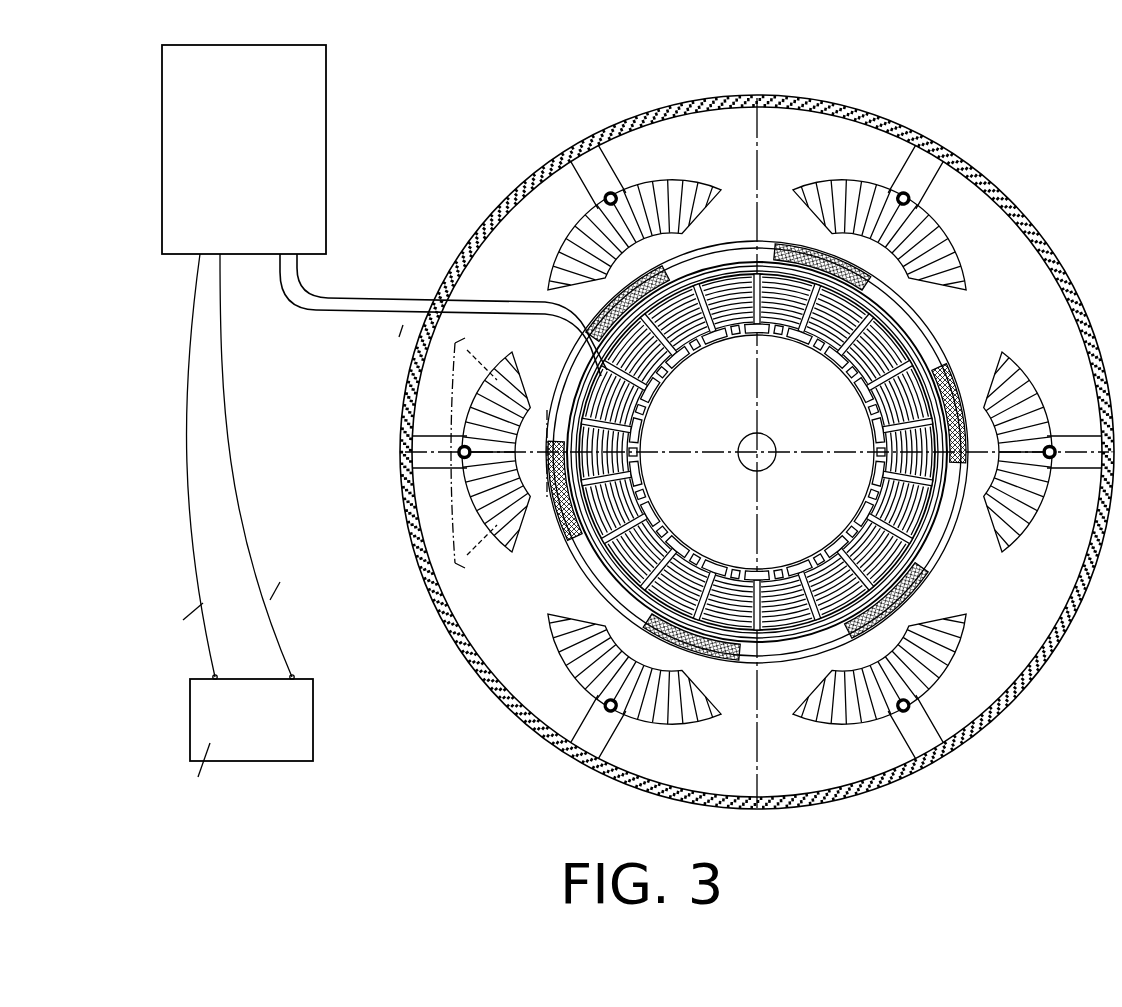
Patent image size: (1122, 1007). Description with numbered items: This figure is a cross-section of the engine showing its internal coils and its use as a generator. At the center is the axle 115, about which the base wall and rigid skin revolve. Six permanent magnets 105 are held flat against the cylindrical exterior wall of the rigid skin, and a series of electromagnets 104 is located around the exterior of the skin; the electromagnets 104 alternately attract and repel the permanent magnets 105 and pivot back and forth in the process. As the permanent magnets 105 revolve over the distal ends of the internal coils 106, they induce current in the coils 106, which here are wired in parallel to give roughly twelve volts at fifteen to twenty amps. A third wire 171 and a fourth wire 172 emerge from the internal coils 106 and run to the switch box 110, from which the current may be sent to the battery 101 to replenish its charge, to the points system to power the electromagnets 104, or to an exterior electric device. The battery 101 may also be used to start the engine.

The battery 101 is at (191, 707).
The electromagnets 104 is at (863, 722).
The permanent magnets 105 is at (573, 548).
The internal coils 106 is at (696, 353).
The switch box 110 is at (255, 217).
The axle 115 is at (770, 466).
The third wire 171 is at (326, 293).
The fourth wire 172 is at (338, 313).